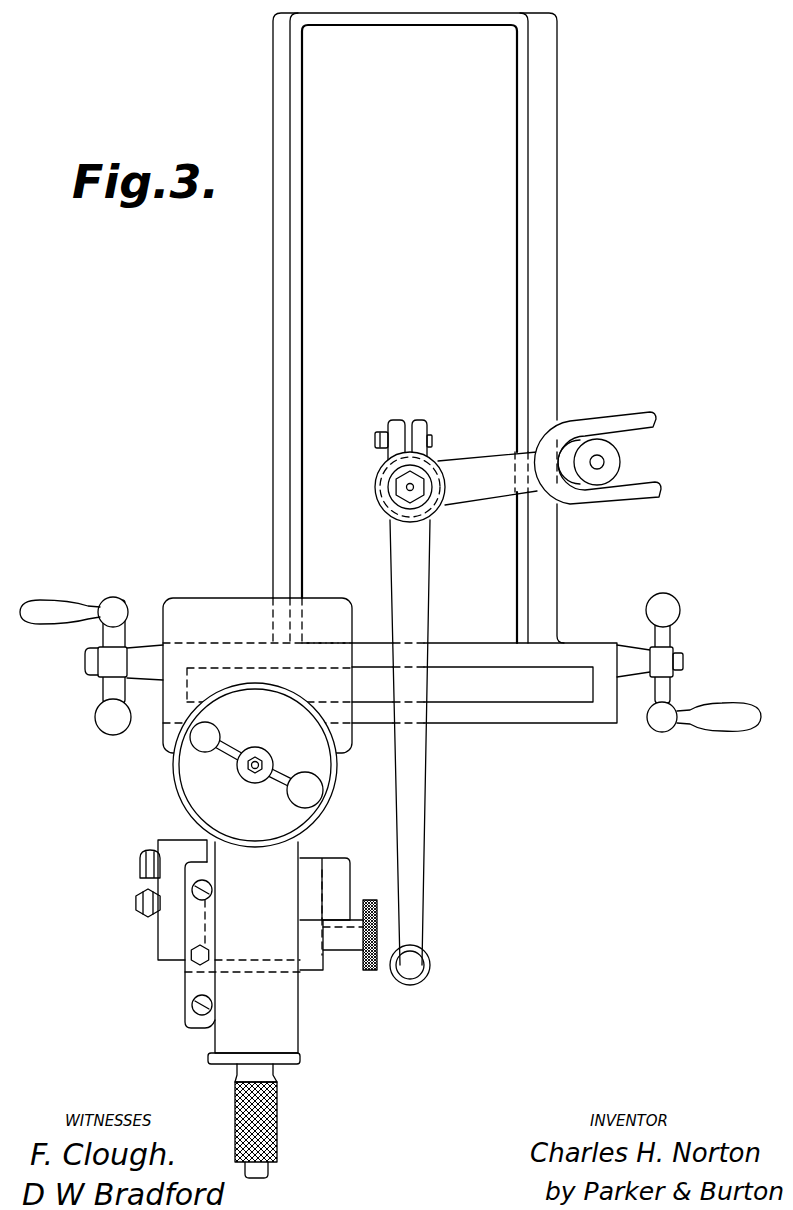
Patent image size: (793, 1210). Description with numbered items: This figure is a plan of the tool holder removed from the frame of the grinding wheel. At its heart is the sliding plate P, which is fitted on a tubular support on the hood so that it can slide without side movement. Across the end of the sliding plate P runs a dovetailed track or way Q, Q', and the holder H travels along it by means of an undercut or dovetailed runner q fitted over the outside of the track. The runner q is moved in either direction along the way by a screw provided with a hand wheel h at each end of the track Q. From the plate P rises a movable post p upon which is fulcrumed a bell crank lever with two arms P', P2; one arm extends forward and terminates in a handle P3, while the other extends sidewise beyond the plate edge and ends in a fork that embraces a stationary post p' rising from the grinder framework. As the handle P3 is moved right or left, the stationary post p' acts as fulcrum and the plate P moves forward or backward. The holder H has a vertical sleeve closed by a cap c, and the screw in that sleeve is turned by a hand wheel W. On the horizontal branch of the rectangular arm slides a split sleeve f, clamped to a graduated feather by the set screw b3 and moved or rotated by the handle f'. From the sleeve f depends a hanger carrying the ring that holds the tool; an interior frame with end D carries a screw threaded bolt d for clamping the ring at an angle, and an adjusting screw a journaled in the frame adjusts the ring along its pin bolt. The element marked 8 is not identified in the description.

The sliding plate P is at (405, 414).
The post p is at (394, 487).
The bell crank lever arm P' is at (420, 742).
The bell crank lever arm P2 is at (487, 488).
The handle P3 is at (426, 965).
The stationary post p' is at (597, 458).
The runner q is at (257, 675).
The holder H is at (269, 703).
The track or way Q is at (484, 683).
The track or way Q' is at (472, 698).
The hand wheel h is at (390, 664).
The hand wheel W is at (233, 761).
The cap c is at (337, 777).
The frame D is at (190, 842).
The screw threaded bolt d is at (136, 865).
The screw 8 is at (163, 955).
The set screw b3 is at (186, 945).
The sleeve f is at (242, 953).
The handle f' is at (274, 1121).
The adjusting screw a is at (357, 945).